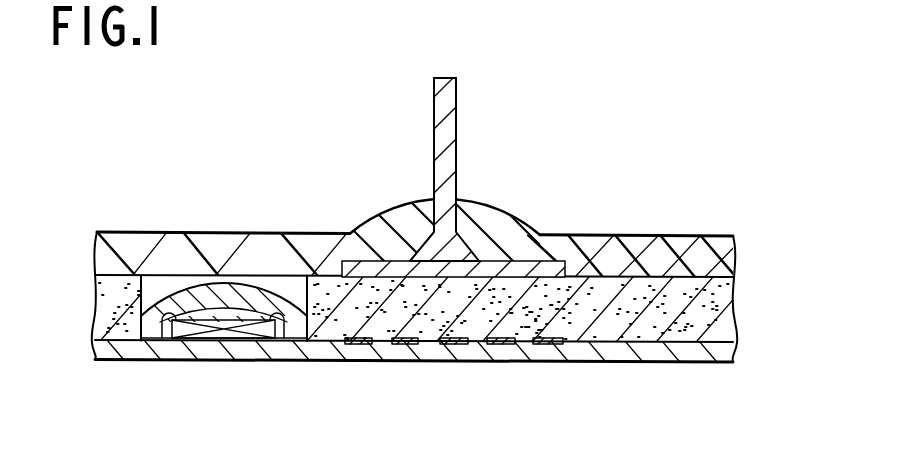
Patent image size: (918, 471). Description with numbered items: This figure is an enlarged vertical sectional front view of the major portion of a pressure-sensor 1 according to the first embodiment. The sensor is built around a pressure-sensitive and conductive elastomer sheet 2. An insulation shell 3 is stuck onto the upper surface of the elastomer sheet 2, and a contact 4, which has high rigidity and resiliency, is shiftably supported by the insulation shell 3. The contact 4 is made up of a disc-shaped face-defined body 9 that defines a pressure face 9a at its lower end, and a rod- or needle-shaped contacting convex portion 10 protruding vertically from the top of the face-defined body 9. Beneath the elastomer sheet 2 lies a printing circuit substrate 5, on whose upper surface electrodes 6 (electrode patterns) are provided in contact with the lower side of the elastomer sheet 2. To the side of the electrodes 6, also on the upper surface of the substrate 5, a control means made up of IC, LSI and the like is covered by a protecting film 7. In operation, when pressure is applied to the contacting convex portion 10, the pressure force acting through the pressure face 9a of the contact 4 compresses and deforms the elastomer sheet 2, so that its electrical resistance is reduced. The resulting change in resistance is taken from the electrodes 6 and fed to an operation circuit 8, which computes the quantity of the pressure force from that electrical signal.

The pressure-sensor 1 is at (607, 128).
The pressure-sensitive and conductive elastomer sheet 2 is at (733, 305).
The insulation shell 3 is at (735, 250).
The contact 4 is at (460, 178).
The printing circuit substrate 5 is at (735, 348).
The electrodes 6 is at (533, 347).
The protecting film 7 is at (143, 334).
The operation circuit 8 is at (228, 334).
The face-defined body 9 is at (540, 238).
The pressure face 9a is at (358, 262).
The contacting convex portion 10 is at (457, 92).